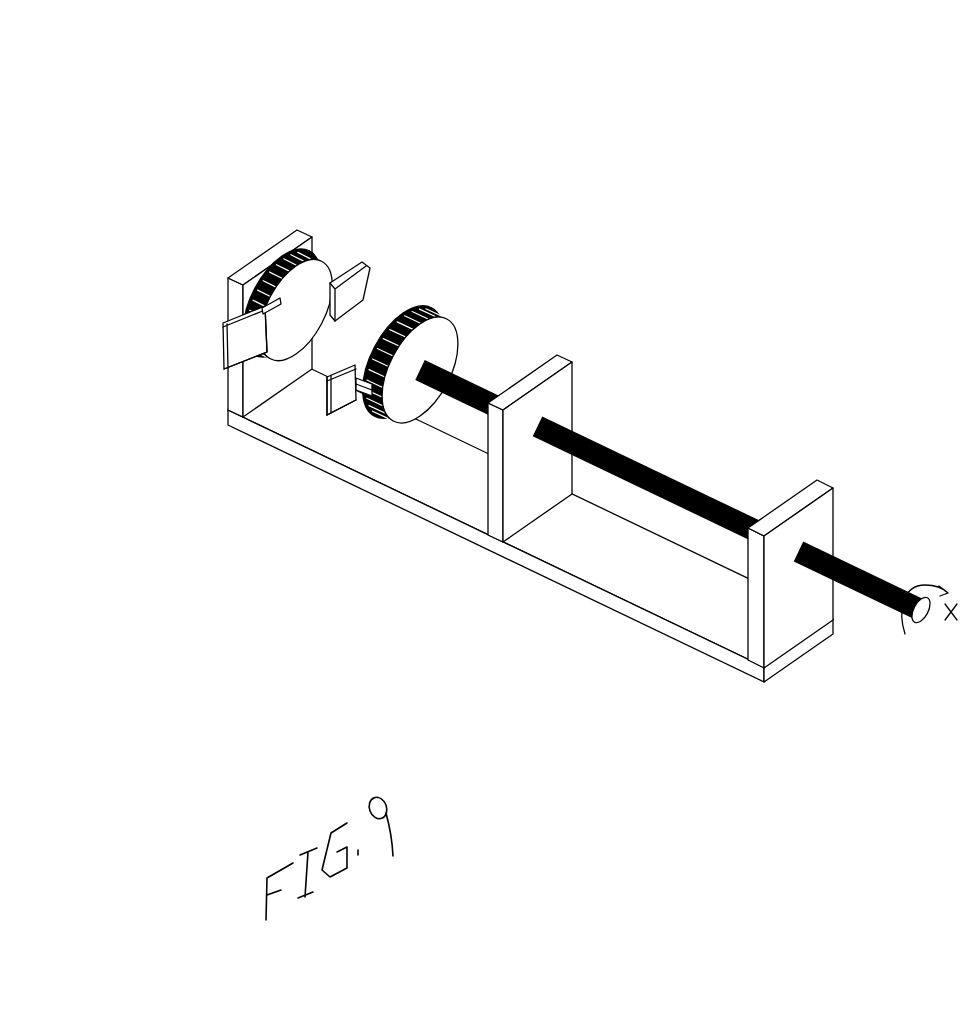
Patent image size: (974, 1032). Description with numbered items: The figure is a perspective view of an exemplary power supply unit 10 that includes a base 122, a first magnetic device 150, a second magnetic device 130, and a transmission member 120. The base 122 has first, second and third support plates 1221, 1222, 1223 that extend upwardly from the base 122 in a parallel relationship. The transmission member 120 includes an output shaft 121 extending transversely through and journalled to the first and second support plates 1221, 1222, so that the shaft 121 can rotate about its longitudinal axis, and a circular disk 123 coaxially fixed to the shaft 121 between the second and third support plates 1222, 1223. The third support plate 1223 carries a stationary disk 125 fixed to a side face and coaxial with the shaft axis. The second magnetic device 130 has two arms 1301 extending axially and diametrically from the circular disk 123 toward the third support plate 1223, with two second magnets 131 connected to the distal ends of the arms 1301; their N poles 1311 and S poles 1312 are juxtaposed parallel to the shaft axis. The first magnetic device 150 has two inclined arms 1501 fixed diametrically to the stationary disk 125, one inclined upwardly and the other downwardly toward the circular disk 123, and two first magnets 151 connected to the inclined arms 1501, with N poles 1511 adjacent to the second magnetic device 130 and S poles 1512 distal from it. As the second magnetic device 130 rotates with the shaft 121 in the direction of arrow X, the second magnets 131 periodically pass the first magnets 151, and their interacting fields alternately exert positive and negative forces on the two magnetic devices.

The power supply unit 10 is at (719, 484).
The transmission member 120 is at (818, 638).
The output shaft 121 is at (897, 583).
The base 122 is at (424, 512).
The first support plate 1221 is at (777, 622).
The second support plate 1222 is at (560, 357).
The third support plate 1223 is at (286, 242).
The circular disk 123 is at (442, 362).
The stationary disk 125 is at (298, 293).
The second magnetic device 130 is at (295, 429).
The arms 1301 is at (366, 396).
The second magnets 131 is at (353, 370).
The N poles 1311 is at (327, 378).
The S poles 1312 is at (362, 388).
The first magnetic device 150 is at (153, 350).
The inclined arms 1501 is at (252, 258).
The first magnets 151 is at (153, 350).
The N poles 1511 is at (262, 352).
The S poles 1512 is at (228, 337).